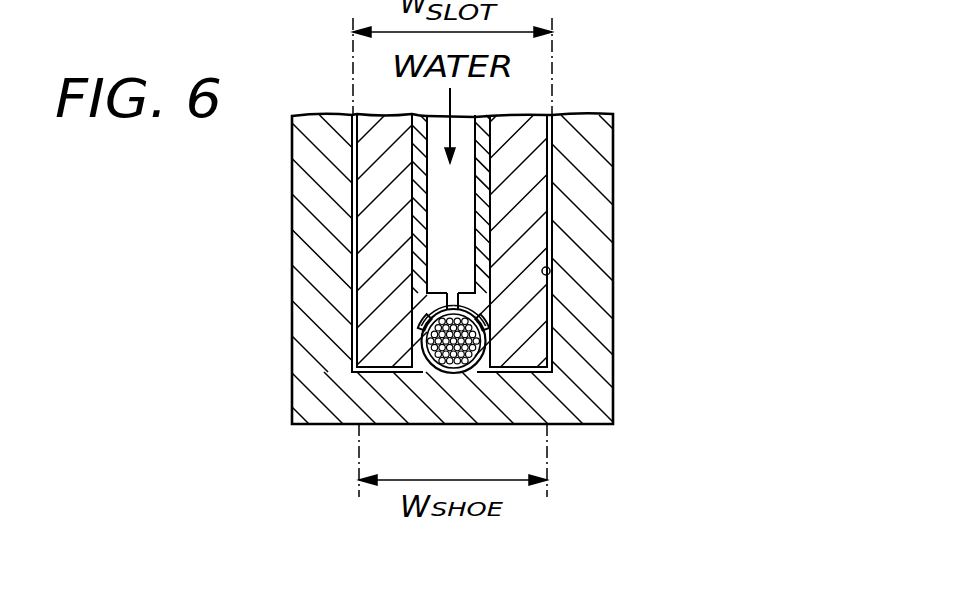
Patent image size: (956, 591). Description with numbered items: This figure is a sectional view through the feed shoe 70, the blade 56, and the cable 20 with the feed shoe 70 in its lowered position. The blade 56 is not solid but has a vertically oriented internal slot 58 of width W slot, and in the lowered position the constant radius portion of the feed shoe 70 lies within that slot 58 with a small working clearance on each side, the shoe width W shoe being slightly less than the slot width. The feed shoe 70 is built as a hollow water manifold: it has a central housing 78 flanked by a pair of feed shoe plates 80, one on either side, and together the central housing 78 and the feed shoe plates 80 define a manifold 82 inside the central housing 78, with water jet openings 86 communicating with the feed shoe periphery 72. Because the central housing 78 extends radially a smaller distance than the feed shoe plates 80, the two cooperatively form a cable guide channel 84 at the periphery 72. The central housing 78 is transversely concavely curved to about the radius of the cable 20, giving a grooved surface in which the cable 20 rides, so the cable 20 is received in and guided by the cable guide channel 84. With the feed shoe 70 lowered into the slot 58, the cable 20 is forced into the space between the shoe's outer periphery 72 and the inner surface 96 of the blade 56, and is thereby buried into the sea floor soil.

The cable 20 is at (431, 372).
The blade 56 is at (603, 214).
The slot 58 is at (550, 263).
The feed shoe 70 is at (377, 108).
The feed shoe periphery 72 is at (490, 313).
The central housing 78 is at (420, 300).
The feed shoe plates 80 is at (370, 185).
The manifold 82 is at (465, 132).
The cable guide channel 84 is at (483, 362).
The water jet openings 86 is at (452, 300).
The inner surface of the blade 96 is at (423, 364).